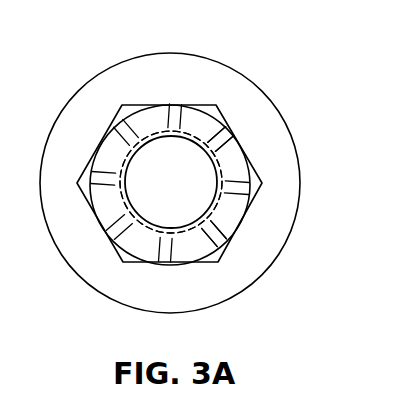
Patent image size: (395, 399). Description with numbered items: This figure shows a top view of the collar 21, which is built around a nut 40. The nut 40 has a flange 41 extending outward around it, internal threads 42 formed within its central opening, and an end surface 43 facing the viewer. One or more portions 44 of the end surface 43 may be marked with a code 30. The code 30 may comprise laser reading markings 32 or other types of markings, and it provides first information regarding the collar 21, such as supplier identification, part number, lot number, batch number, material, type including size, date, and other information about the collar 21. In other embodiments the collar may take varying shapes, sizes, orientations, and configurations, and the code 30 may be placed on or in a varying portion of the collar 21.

The collar 21 is at (281, 79).
The code 30 is at (200, 238).
The laser reading markings 32 is at (171, 182).
The nut 40 is at (250, 152).
The flange 41 is at (299, 210).
The internal threads 42 is at (238, 228).
The end surface 43 is at (212, 104).
The portions of the end surface 44 is at (238, 132).